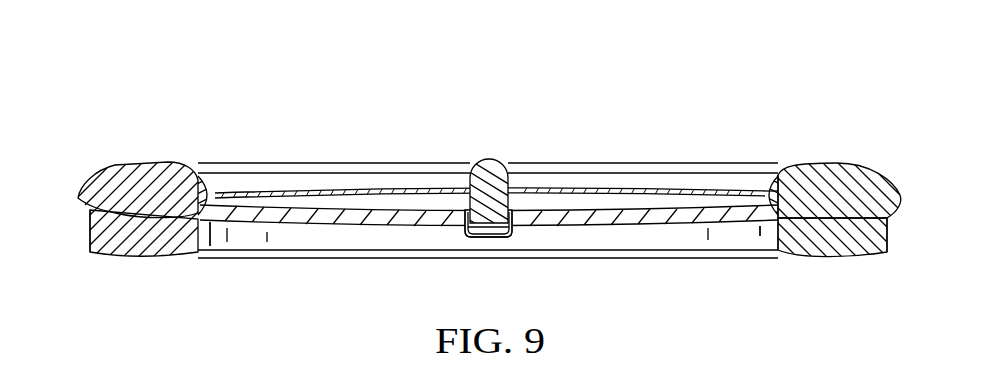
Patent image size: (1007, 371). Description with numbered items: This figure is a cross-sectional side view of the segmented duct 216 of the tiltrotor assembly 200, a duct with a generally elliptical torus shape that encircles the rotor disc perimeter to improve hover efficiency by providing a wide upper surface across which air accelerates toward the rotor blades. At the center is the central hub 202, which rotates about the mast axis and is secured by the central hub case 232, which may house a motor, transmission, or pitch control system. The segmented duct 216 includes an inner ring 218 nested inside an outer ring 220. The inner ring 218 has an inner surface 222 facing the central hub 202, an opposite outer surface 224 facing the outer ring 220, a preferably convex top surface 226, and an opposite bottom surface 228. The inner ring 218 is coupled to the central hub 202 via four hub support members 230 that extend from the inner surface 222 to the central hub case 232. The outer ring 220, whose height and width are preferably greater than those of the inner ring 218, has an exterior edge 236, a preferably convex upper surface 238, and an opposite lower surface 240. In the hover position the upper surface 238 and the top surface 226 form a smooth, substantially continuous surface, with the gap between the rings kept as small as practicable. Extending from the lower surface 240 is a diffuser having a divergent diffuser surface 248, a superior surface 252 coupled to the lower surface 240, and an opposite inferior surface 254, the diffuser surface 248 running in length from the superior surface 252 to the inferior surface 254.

The tiltrotor assembly 200 is at (171, 89).
The central hub 202 is at (490, 158).
The segmented duct 216 is at (807, 210).
The inner ring 218 is at (216, 190).
The outer ring 220 is at (142, 203).
The inner surface 222 is at (766, 196).
The outer surface 224 is at (800, 256).
The top surface 226 is at (772, 192).
The bottom surface 228 is at (773, 222).
The hub support members 230 is at (346, 218).
The central hub case 232 is at (492, 242).
The exterior edge 236 is at (898, 204).
The upper surface 238 is at (845, 163).
The lower surface 240 is at (88, 228).
The diffuser surface 248 is at (253, 240).
The superior surface 252 is at (125, 205).
The inferior surface 254 is at (110, 256).